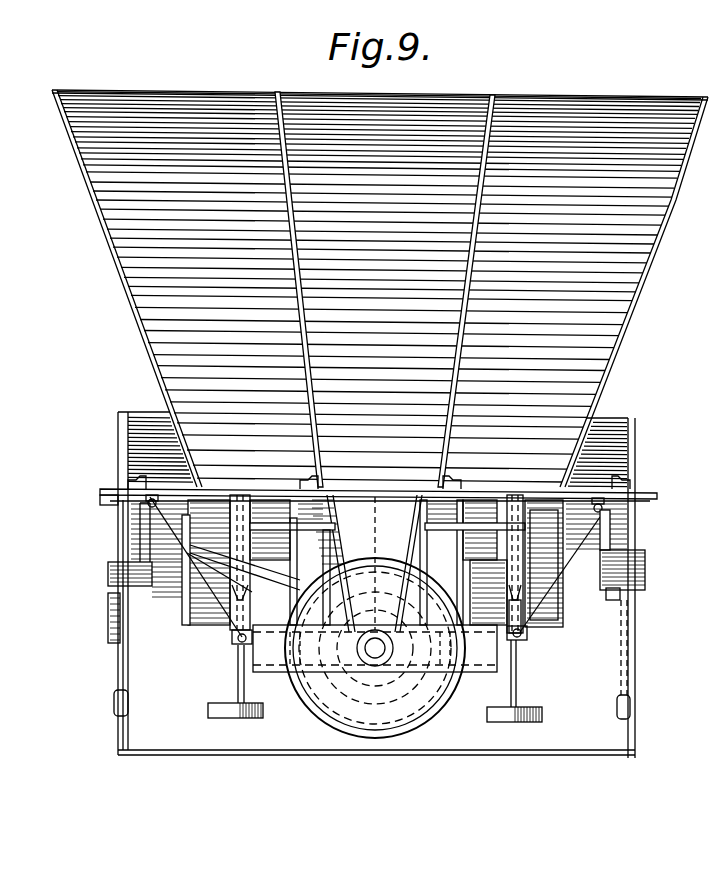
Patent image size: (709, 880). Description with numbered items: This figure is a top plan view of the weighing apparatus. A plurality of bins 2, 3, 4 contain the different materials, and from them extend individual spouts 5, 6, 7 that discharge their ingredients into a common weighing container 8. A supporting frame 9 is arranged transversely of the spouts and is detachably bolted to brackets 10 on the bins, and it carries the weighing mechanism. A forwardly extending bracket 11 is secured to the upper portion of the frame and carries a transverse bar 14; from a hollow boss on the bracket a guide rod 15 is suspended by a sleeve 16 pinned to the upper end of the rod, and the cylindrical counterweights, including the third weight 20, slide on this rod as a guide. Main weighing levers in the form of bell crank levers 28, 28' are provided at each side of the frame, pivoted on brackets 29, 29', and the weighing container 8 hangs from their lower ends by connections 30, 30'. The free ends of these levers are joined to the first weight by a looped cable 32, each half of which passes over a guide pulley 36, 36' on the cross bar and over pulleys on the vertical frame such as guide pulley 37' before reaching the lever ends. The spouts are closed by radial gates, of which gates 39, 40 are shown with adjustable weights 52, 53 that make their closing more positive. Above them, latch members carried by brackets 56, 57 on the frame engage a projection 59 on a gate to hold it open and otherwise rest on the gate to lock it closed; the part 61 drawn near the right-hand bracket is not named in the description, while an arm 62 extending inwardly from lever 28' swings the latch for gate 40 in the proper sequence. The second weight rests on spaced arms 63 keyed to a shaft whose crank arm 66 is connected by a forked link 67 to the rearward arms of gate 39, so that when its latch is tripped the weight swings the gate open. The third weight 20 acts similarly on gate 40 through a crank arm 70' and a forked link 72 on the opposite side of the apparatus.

The bin 2 is at (325, 122).
The bin 3 is at (578, 122).
The bin 4 is at (178, 115).
The spout 5 is at (452, 540).
The spout 6 is at (548, 600).
The spout 7 is at (205, 605).
The weighing container 8 is at (170, 738).
The supporting frame 9 is at (100, 492).
The bracket 10 is at (132, 480).
The forwardly extending bracket 11 is at (362, 545).
The transverse bar 14 is at (270, 660).
The guide rod 15 is at (373, 658).
The sleeve 16 is at (383, 660).
The third weight 20 is at (392, 733).
The bell crank lever 28 is at (643, 558).
The bell crank lever 28' is at (101, 574).
The bracket 29 is at (610, 620).
The bracket 29' is at (156, 569).
The connection 30 is at (653, 659).
The connection 30' is at (100, 654).
The looped cable 32 is at (537, 612).
The guide pulley 36 is at (498, 673).
The guide pulley 36' is at (218, 674).
The guide pulley 37' is at (161, 566).
The radial gate 39 is at (565, 606).
The radial gate 40 is at (186, 595).
The adjustable weight 52 is at (545, 714).
The adjustable weight 53 is at (220, 712).
The bracket 56 is at (527, 505).
The bracket 57 is at (233, 505).
The projection 59 is at (240, 641).
The right arm 61 is at (590, 556).
The arm 62 is at (178, 556).
The arms 63 is at (341, 530).
The crank arm 66 is at (540, 545).
The forked link 67 is at (495, 570).
The crank arm 70' is at (262, 545).
The forked link 72 is at (280, 570).